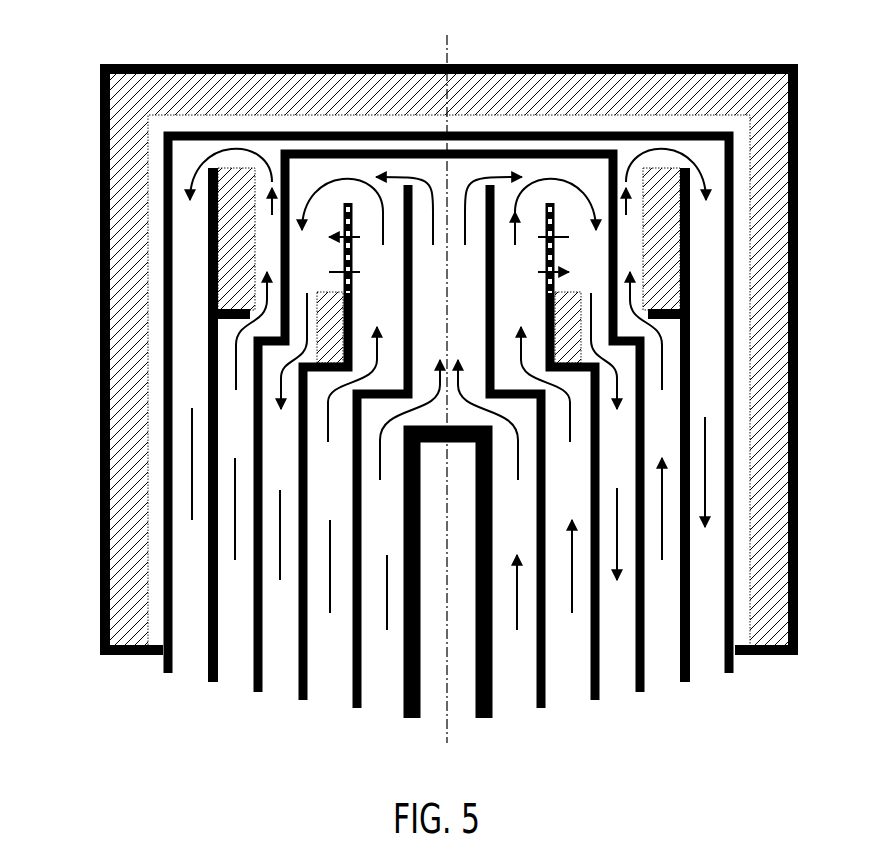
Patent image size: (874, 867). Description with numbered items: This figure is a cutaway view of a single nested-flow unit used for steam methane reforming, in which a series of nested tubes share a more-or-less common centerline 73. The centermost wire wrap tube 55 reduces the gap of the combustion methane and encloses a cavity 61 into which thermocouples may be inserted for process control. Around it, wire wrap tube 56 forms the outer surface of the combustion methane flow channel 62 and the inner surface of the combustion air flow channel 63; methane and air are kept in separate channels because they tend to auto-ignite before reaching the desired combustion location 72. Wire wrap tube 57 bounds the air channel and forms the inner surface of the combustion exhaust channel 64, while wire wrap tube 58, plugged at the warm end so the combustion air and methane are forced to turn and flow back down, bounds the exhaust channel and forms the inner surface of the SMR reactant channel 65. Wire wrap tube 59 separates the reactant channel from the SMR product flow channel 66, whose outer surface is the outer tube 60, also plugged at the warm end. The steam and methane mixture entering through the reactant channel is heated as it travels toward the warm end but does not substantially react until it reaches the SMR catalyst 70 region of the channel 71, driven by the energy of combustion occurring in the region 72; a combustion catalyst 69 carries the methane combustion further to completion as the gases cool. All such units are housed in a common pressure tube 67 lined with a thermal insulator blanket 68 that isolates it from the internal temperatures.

The wire wrap tube 55 is at (484, 720).
The wire wrap tube 56 is at (541, 711).
The wire wrap tube 57 is at (596, 703).
The wire wrap tube 58 is at (642, 695).
The wire wrap tube 59 is at (686, 685).
The tube 60 is at (733, 676).
The cavity 61 is at (432, 706).
The combustion methane flow channel 62 is at (377, 686).
The combustion air flow channel 63 is at (328, 680).
The combustion exhaust channel 64 is at (280, 668).
The SMR reactant channel 65 is at (230, 660).
The SMR product flow channel 66 is at (190, 638).
The pressure tube 67 is at (103, 658).
The thermal insulator blanket 68 is at (125, 537).
The combustion catalyst 69 is at (326, 318).
The SMR catalyst 70 is at (236, 220).
The channel 71 is at (628, 232).
The combustion location 72 is at (579, 250).
The centerline 73 is at (450, 33).